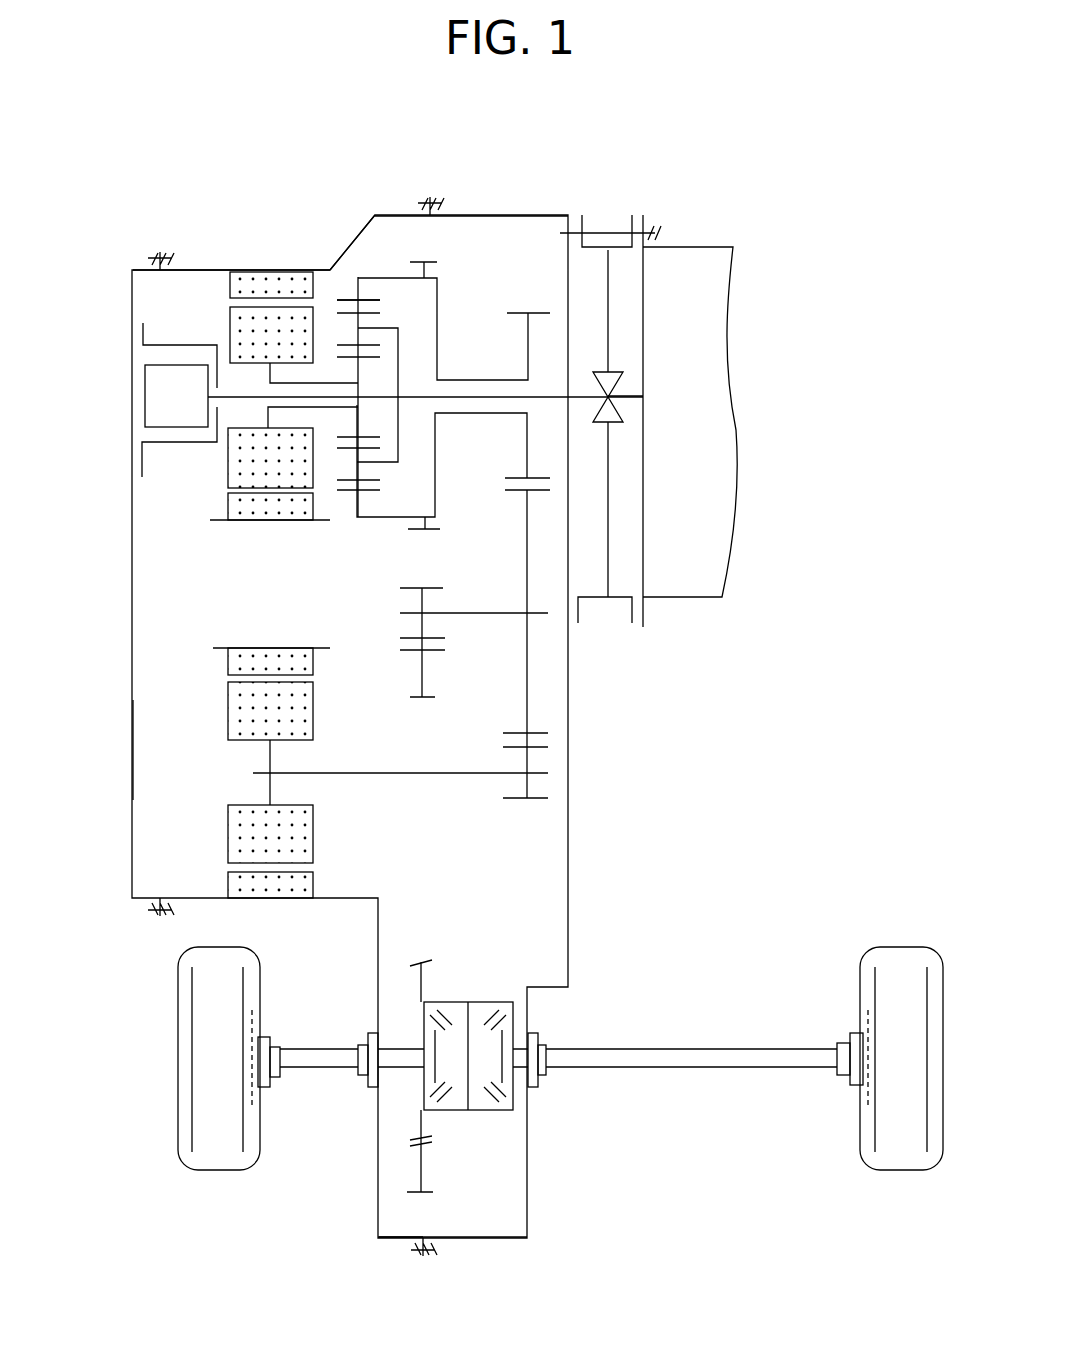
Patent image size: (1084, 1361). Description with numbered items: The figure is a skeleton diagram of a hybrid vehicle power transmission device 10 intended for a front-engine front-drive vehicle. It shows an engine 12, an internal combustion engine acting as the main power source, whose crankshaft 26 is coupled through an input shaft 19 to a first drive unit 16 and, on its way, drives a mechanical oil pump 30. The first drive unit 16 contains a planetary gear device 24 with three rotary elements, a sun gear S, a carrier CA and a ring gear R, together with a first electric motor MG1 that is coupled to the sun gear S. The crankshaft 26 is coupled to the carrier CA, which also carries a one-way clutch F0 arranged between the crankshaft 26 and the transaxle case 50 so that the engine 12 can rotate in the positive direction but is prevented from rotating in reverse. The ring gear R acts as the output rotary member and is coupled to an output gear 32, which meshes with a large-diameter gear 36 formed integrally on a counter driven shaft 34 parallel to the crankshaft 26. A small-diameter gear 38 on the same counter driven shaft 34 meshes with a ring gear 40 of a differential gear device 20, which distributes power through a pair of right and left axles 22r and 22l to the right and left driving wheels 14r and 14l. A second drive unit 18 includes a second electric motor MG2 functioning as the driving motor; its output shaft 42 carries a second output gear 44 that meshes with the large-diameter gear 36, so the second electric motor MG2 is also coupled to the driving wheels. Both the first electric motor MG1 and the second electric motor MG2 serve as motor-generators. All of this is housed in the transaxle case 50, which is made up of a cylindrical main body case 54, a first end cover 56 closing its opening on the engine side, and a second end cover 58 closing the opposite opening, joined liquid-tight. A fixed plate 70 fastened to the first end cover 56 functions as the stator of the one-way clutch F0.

The hybrid vehicle power transmission device 10 is at (683, 718).
The engine 12 is at (695, 583).
The left driving wheel 14l is at (220, 1157).
The right driving wheel 14r is at (903, 1153).
The first drive unit 16 is at (427, 415).
The second drive unit 18 is at (471, 808).
The input shaft 19 is at (572, 400).
The differential gear device 20 is at (551, 1114).
The left axle 22l is at (313, 1050).
The right axle 22r is at (703, 1050).
The planetary gear device 24 is at (365, 258).
The crankshaft 26 is at (630, 393).
The mechanical oil pump 30 is at (158, 402).
The output gear 32 is at (540, 478).
The counter driven shaft 34 is at (478, 617).
The large-diameter gear 36 is at (517, 500).
The small-diameter gear 38 is at (428, 597).
The ring gear of the differential gear device 40 is at (415, 655).
The output shaft of the second electric motor 42 is at (367, 777).
The second output gear 44 is at (535, 753).
The transaxle case 50 is at (543, 182).
The main body case 54 is at (205, 268).
The first end cover 56 is at (493, 215).
The second end cover 58 is at (130, 750).
The fixed plate 70 is at (595, 605).
The first electric motor MG1 is at (203, 486).
The second electric motor MG2 is at (210, 712).
The carrier CA is at (385, 327).
The sun gear S is at (373, 435).
The ring gear R is at (343, 497).
The one-way clutch F0 is at (600, 379).